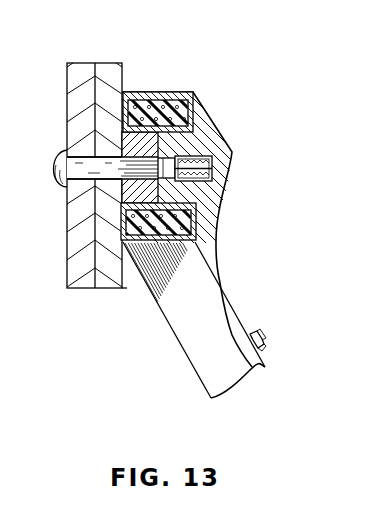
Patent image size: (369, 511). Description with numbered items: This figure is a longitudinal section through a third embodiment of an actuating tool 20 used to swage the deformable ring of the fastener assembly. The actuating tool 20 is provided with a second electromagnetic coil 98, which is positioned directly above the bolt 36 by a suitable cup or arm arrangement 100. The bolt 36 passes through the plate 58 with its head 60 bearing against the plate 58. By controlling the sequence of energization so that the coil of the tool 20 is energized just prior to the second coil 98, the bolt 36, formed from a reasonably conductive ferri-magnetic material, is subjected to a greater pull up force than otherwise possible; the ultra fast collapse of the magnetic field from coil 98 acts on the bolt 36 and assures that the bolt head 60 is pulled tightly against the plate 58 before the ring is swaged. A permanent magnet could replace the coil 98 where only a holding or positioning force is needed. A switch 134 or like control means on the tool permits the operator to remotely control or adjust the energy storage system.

The actuating tool 20 is at (186, 92).
The bolt 36 is at (94, 168).
The plate 58 is at (91, 236).
The head 60 is at (56, 171).
The second electromagnetic coil 98 is at (232, 161).
The cup or arm arrangement 100 is at (205, 130).
The switch 134 is at (278, 313).